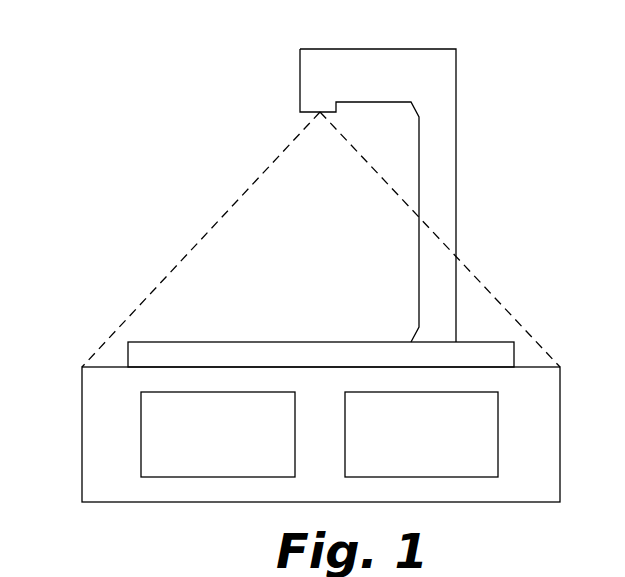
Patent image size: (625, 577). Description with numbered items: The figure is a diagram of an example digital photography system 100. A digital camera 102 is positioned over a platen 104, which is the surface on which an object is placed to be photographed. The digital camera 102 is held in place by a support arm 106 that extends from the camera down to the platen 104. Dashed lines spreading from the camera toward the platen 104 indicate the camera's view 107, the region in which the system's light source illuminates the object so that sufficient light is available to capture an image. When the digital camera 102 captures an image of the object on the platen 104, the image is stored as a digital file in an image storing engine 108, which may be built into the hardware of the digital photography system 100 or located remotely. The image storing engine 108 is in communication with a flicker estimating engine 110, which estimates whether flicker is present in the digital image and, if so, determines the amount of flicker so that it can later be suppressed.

The digital photography system 100 is at (85, 189).
The digital camera 102 is at (322, 112).
The platen 104 is at (233, 342).
The support arm 106 is at (447, 187).
The camera's view 107 is at (199, 244).
The image storing engine 108 is at (498, 433).
The flicker estimating engine 110 is at (141, 433).